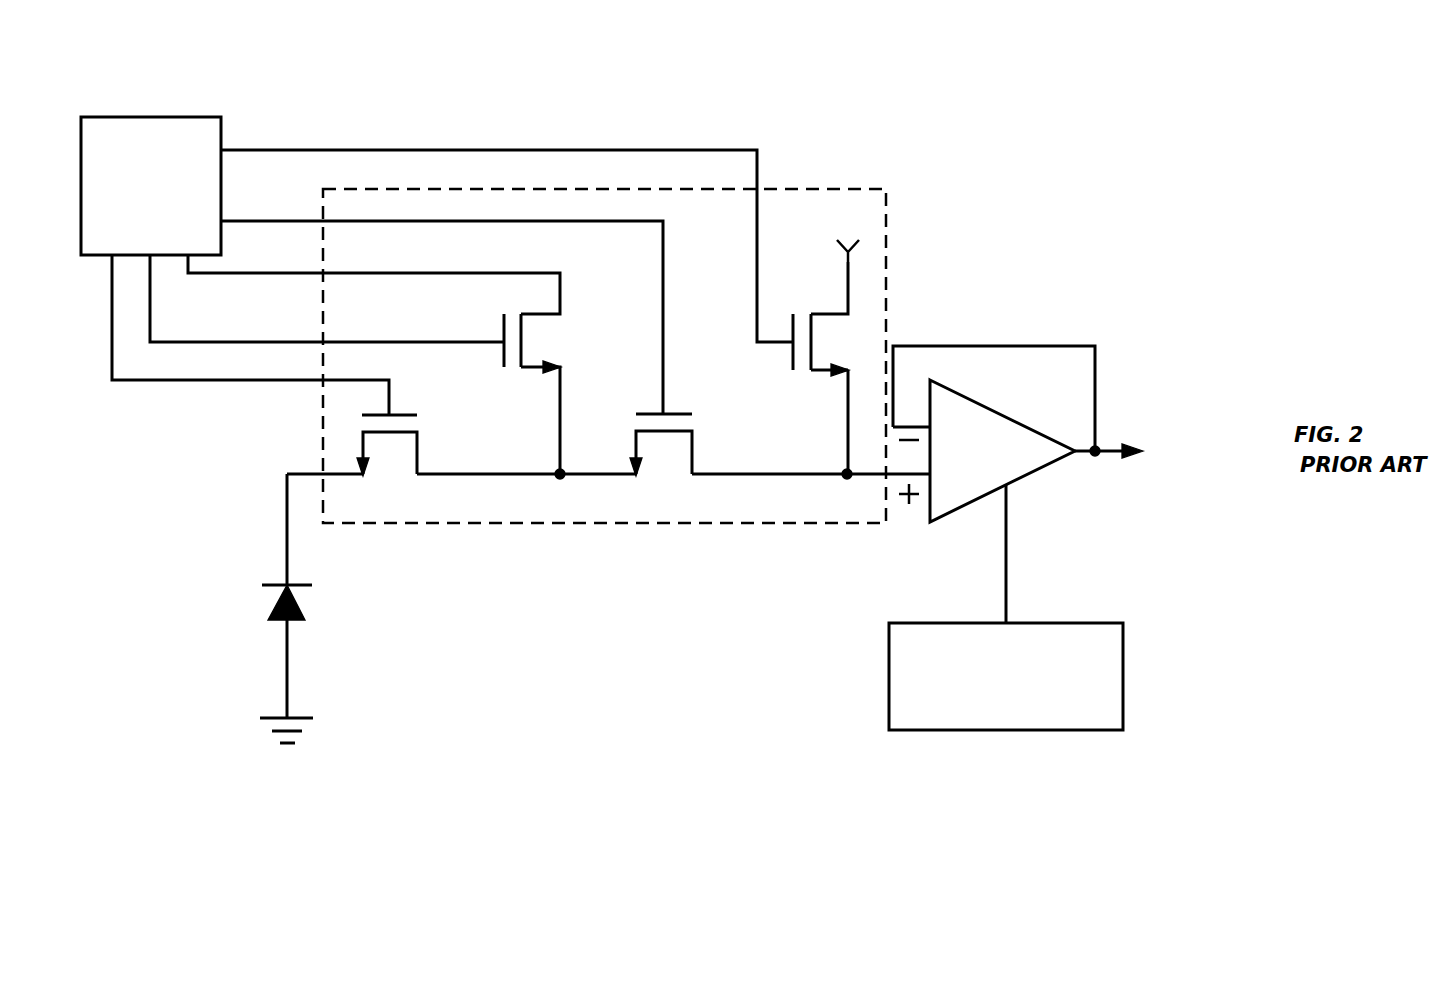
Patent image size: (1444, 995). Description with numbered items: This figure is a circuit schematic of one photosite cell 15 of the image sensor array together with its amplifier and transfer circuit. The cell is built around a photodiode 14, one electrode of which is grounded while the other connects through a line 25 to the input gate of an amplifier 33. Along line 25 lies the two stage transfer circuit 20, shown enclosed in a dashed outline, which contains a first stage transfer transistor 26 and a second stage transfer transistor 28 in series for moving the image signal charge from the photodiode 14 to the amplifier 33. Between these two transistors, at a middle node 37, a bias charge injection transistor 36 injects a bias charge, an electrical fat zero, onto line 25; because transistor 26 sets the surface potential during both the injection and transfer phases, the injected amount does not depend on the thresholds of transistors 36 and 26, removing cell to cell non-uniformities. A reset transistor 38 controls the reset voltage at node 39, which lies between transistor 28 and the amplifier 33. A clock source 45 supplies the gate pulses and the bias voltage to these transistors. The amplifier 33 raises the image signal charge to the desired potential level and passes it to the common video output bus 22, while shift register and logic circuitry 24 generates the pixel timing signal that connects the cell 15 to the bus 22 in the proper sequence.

The photosite cell 15 is at (657, 62).
The clock source 45 is at (182, 116).
The two stage transfer circuit 20 is at (828, 183).
The first stage transfer transistor 26 is at (385, 472).
The bias charge injection transistor 36 is at (568, 340).
The middle node 37 is at (565, 480).
The second stage transfer transistor 28 is at (664, 472).
The reset transistor 38 is at (853, 345).
The node 39 is at (848, 478).
The amplifier 33 is at (985, 406).
The common video output bus 22 is at (1112, 440).
The shift register and logic circuitry 24 is at (889, 675).
The line 25 is at (287, 502).
The photodiode 14 is at (272, 603).